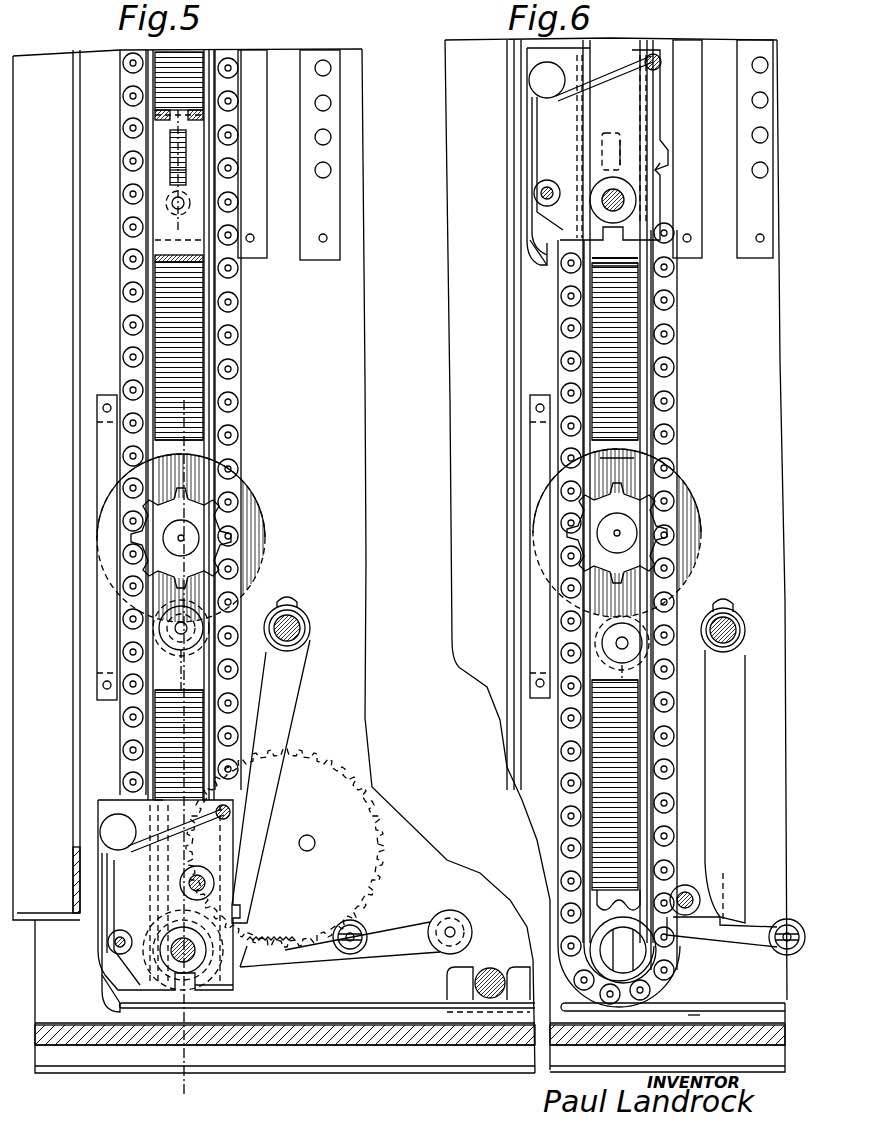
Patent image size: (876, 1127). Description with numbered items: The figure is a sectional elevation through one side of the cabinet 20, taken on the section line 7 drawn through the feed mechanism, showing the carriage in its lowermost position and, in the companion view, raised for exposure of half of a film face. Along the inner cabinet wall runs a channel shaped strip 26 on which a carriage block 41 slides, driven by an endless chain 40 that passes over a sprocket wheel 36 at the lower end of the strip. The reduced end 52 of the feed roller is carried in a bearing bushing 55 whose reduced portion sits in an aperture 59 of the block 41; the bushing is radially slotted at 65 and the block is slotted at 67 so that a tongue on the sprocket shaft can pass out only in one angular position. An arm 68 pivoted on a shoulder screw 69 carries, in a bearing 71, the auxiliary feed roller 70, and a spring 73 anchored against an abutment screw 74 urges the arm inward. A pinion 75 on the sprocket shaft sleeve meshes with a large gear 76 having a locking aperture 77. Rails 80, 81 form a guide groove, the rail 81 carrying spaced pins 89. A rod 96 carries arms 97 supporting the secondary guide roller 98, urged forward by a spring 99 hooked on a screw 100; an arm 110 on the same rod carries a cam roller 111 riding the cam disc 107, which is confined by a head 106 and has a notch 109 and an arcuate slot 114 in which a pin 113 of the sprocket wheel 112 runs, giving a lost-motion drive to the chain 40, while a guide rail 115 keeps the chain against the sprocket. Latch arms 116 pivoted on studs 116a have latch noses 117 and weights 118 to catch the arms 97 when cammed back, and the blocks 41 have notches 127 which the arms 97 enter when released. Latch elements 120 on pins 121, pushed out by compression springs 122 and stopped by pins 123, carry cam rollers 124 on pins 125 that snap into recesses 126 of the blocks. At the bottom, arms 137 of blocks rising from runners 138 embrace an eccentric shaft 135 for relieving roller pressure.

In FIG. 5, the section line 7 is at (183, 761).
In FIG. 5, the cabinet 20 is at (352, 402).
In FIG. 6, the cabinet 20 is at (460, 407).
In FIG. 5, the channel shaped strips 26 is at (153, 312).
In FIG. 6, the channel shaped strips 26 is at (592, 397).
In FIG. 6, the sprocket wheel 36 is at (605, 905).
In FIG. 5, the endless chains 40 is at (128, 298).
In FIG. 6, the endless chains 40 is at (566, 734).
In FIG. 5, the carriage block 41 is at (112, 802).
In FIG. 6, the carriage block 41 is at (655, 125).
In FIG. 5, the reduced end 52 is at (234, 985).
In FIG. 6, the reduced end 52 is at (625, 200).
In FIG. 6, the bearing bushing 55 is at (600, 960).
In FIG. 6, the aperture 59 is at (616, 150).
In FIG. 6, the radial slot 65 is at (590, 1001).
In FIG. 6, the slot 67 is at (597, 264).
In FIG. 5, the arm 68 is at (106, 976).
In FIG. 6, the arm 68 is at (545, 252).
In FIG. 5, the shoulder screw 69 is at (103, 832).
In FIG. 6, the shoulder screw 69 is at (529, 80).
In FIG. 5, the auxiliary feed roller 70 is at (116, 950).
In FIG. 6, the auxiliary feed roller 70 is at (540, 198).
In FIG. 5, the bearings 71 is at (107, 938).
In FIG. 6, the bearings 71 is at (534, 190).
In FIG. 5, the springs 73 is at (105, 880).
In FIG. 6, the springs 73 is at (531, 128).
In FIG. 5, the abutment screw 74 is at (235, 822).
In FIG. 6, the abutment screw 74 is at (661, 61).
In FIG. 5, the pinion 75 is at (141, 1045).
In FIG. 5, the gear 76 is at (330, 878).
In FIG. 5, the aperture 77 is at (316, 841).
In FIG. 5, the rail 80 is at (258, 256).
In FIG. 6, the rail 80 is at (697, 235).
In FIG. 5, the rail 81 is at (330, 205).
In FIG. 6, the rail 81 is at (760, 248).
In FIG. 5, the spaced pins 89 is at (331, 168).
In FIG. 6, the spaced pins 89 is at (760, 173).
In FIG. 5, the rod 96 is at (300, 641).
In FIG. 6, the rod 96 is at (731, 620).
In FIG. 5, the arms 97 is at (284, 735).
In FIG. 6, the arms 97 is at (745, 810).
In FIG. 5, the secondary guide roller 98 is at (195, 876).
In FIG. 6, the secondary guide roller 98 is at (690, 885).
In FIG. 5, the spring 99 is at (306, 620).
In FIG. 6, the spring 99 is at (745, 650).
In FIG. 5, the screw 100 is at (296, 600).
In FIG. 5, the head 106 is at (200, 551).
In FIG. 6, the head 106 is at (600, 545).
In FIG. 5, the cam disc 107 is at (261, 515).
In FIG. 6, the cam disc 107 is at (700, 530).
In FIG. 5, the notch 109 is at (168, 606).
In FIG. 6, the notch 109 is at (622, 458).
In FIG. 5, the arm 110 is at (205, 625).
In FIG. 6, the arm 110 is at (660, 620).
In FIG. 5, the cam roller 111 is at (171, 670).
In FIG. 6, the cam roller 111 is at (611, 675).
In FIG. 5, the sprocket wheel 112 is at (200, 505).
In FIG. 6, the sprocket wheel 112 is at (640, 500).
In FIG. 5, the pin 113 is at (181, 538).
In FIG. 6, the pin 113 is at (617, 533).
In FIG. 5, the arcuate slot 114 is at (160, 518).
In FIG. 6, the arcuate slot 114 is at (580, 572).
In FIG. 5, the guide rail 115 is at (103, 432).
In FIG. 6, the guide rail 115 is at (537, 432).
In FIG. 5, the latch arms 116 is at (331, 962).
In FIG. 6, the latch arms 116 is at (712, 957).
In FIG. 5, the studs 116a is at (356, 934).
In FIG. 6, the studs 116a is at (782, 920).
In FIG. 5, the latch nose 117 is at (290, 946).
In FIG. 6, the latch nose 117 is at (724, 950).
In FIG. 5, the weight 118 is at (450, 913).
In FIG. 5, the latch elements 120 is at (179, 217).
In FIG. 6, the latch elements 120 is at (626, 265).
In FIG. 6, the pins 121 is at (662, 160).
In FIG. 5, the compression spring 122 is at (166, 205).
In FIG. 5, the pins 123 is at (160, 116).
In FIG. 5, the cam roller 124 is at (170, 150).
In FIG. 5, the pin 125 is at (160, 170).
In FIG. 6, the depression 126 is at (619, 130).
In FIG. 5, the notches 127 is at (250, 936).
In FIG. 5, the eccentric shaft 135 is at (470, 966).
In FIG. 5, the arms 137 is at (452, 978).
In FIG. 5, the runners 138 is at (300, 1007).
In FIG. 6, the runners 138 is at (688, 1016).